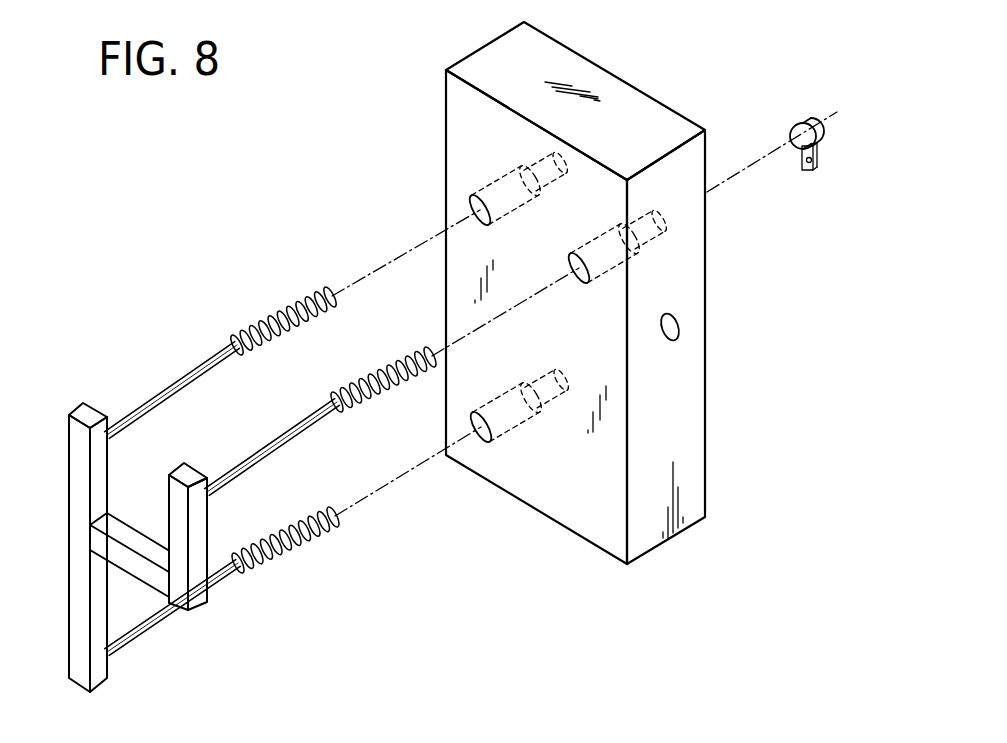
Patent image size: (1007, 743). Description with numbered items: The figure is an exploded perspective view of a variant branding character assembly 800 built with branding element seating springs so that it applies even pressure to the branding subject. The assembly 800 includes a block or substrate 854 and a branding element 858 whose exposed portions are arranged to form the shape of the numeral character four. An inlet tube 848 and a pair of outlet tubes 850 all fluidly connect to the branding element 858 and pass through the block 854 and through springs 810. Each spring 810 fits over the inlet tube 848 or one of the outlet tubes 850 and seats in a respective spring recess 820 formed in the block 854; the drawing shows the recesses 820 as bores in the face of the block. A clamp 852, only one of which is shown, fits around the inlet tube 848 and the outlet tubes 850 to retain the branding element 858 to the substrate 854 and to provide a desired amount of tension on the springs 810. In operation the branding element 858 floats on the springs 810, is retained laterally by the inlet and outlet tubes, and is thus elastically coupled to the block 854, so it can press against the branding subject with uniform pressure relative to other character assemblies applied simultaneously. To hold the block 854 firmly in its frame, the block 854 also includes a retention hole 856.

The branding character assembly 800 is at (609, 323).
The spring 810 is at (276, 318).
The spring recess 820 is at (489, 190).
The inlet tube 848 is at (168, 621).
The outlet tube 850 is at (170, 386).
The clamp 852 is at (800, 120).
The substrate 854 is at (603, 69).
The retention hole 856 is at (681, 324).
The branding element 858 is at (68, 512).